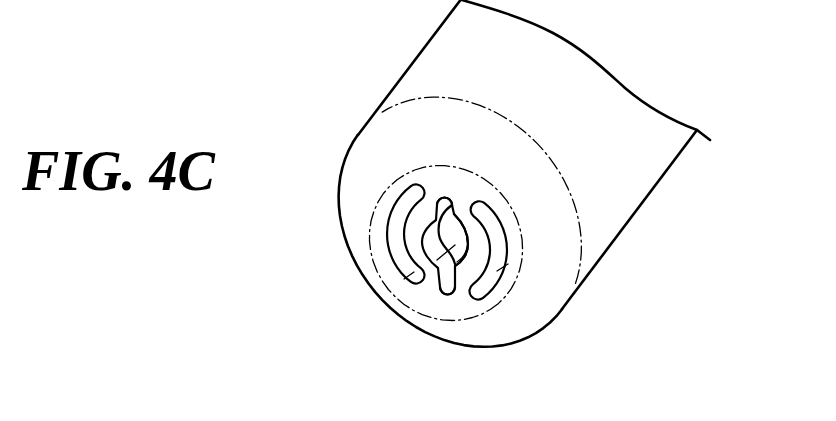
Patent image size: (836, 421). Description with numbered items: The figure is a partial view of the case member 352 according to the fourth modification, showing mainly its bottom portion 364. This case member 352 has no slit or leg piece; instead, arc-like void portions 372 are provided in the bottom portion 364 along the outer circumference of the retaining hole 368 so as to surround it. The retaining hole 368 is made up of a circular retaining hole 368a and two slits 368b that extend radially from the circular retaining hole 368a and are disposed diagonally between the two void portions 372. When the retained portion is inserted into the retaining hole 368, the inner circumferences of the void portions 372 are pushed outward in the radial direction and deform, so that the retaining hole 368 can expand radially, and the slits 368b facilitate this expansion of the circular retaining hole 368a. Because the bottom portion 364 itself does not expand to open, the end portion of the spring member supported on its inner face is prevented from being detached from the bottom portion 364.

The housing / cylindrical body 352 is at (603, 185).
The bottom portion 364 is at (517, 272).
The retaining hole 368 is at (423, 241).
The circular retaining hole 368a is at (468, 238).
The slits 368b is at (442, 197).
The void portions 372 is at (388, 223).